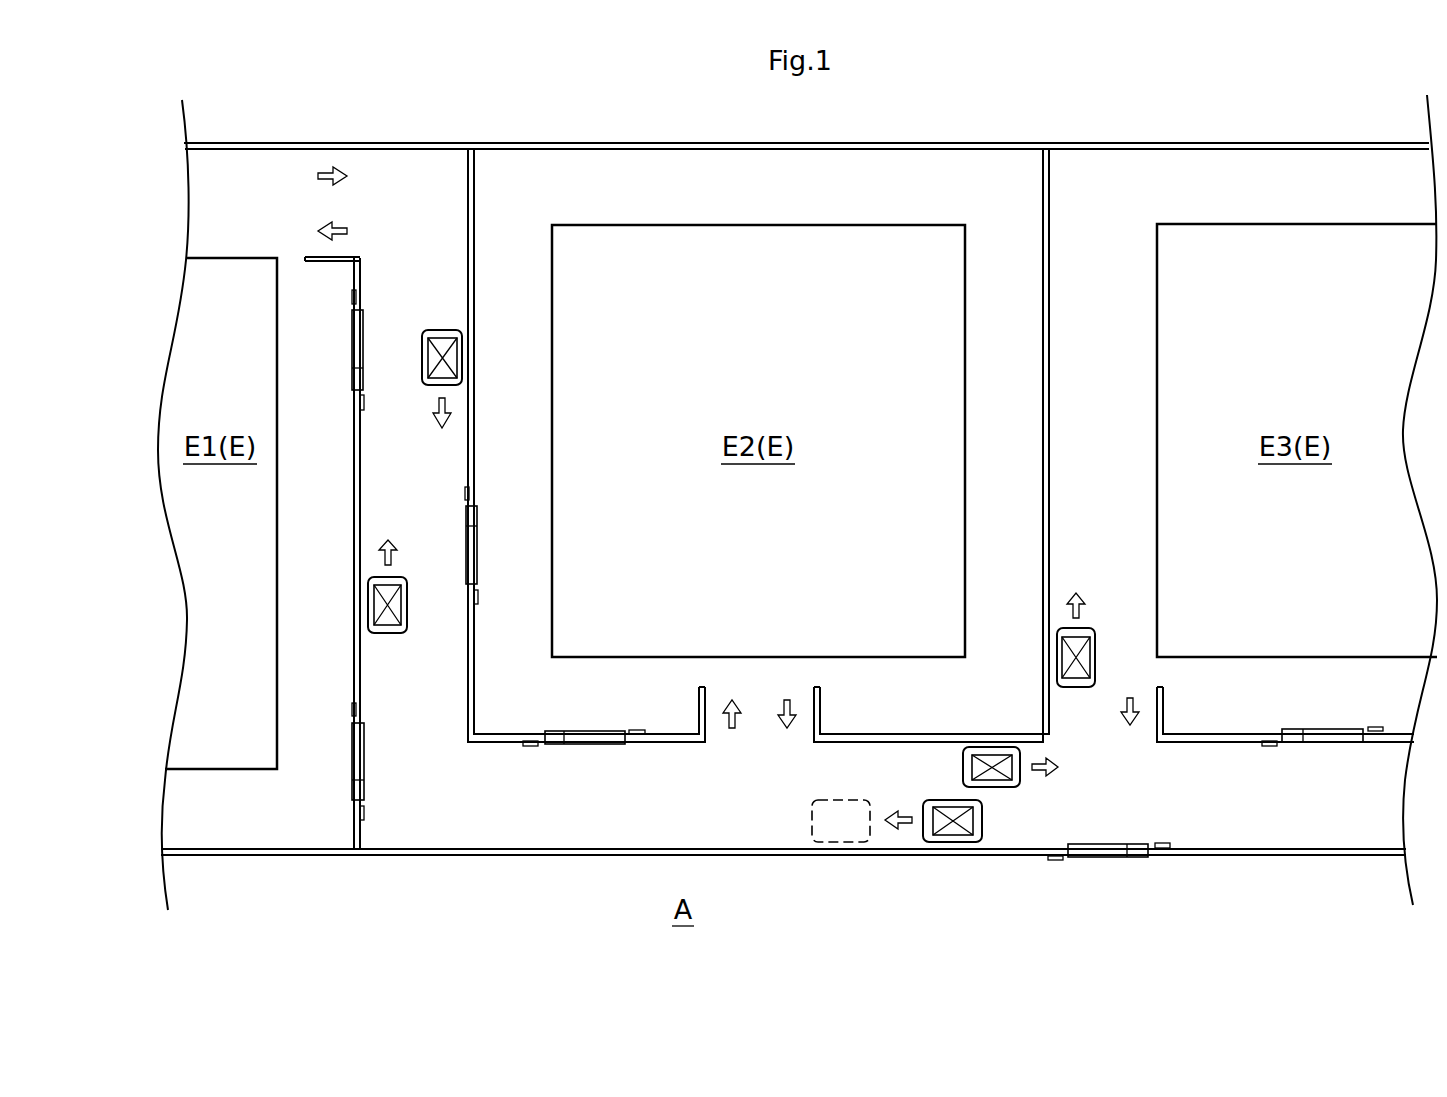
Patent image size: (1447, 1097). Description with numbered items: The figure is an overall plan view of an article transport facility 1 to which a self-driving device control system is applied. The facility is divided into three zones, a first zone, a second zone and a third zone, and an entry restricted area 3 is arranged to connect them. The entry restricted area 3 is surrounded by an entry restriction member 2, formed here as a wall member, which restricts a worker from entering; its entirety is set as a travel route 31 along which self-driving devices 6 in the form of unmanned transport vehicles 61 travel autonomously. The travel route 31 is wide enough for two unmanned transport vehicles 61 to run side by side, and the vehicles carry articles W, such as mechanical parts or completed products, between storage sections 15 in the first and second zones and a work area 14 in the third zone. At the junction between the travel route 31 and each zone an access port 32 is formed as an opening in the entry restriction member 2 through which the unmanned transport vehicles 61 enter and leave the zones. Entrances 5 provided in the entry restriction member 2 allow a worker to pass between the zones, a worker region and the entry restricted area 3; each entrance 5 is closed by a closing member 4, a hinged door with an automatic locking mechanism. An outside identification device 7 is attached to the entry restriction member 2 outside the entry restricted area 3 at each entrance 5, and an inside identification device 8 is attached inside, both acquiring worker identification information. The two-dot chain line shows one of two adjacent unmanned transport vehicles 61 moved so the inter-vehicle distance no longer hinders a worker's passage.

The article transport facility 1 is at (219, 69).
The entry restriction member 2 is at (468, 210).
The entry restricted area 3 is at (456, 132).
The closing member 4 is at (352, 351).
The entrance 5 is at (319, 377).
The self-driving device 6 is at (830, 843).
The outside identification device 7 is at (350, 297).
The inside identification device 8 is at (364, 404).
The work area 14 is at (1295, 222).
The storage section 15 is at (183, 775).
The travel route 31 is at (515, 835).
The access port 32 is at (288, 184).
The unmanned transport vehicle 61 is at (1058, 645).
The article W is at (462, 368).